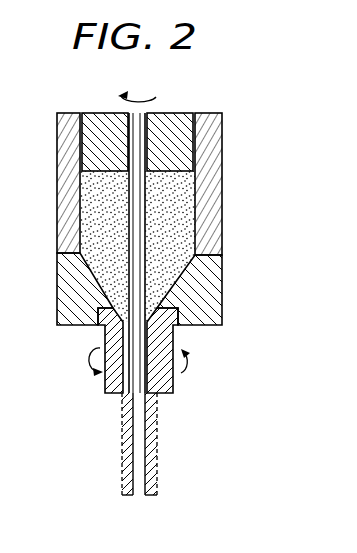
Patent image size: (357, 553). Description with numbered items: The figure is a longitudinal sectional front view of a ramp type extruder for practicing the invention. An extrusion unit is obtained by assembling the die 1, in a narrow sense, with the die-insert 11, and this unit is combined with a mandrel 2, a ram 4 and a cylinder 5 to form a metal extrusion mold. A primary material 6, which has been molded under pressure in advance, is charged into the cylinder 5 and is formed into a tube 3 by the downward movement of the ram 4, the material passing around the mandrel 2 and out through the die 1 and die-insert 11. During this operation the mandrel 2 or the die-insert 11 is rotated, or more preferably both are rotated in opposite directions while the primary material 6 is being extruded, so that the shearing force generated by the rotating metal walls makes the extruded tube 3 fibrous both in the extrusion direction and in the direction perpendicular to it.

The die 1 is at (207, 310).
The mandrel 2 is at (146, 123).
The tube 3 is at (152, 438).
The ram 4 is at (185, 152).
The cylinder 5 is at (207, 208).
The primary material 6 is at (175, 272).
The die-insert 11 is at (177, 347).